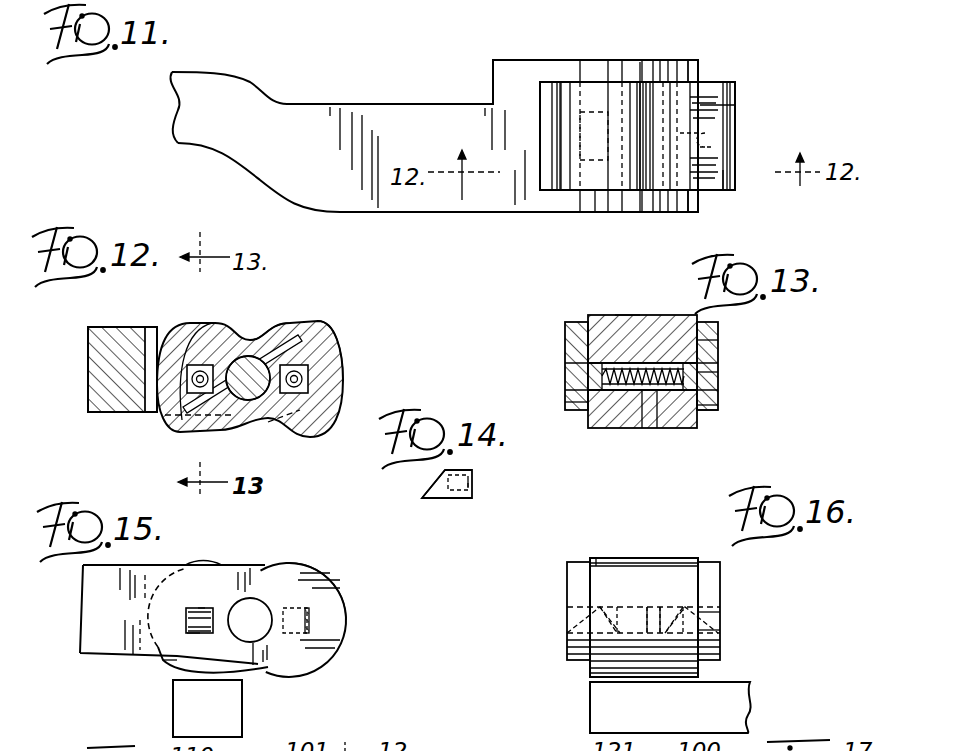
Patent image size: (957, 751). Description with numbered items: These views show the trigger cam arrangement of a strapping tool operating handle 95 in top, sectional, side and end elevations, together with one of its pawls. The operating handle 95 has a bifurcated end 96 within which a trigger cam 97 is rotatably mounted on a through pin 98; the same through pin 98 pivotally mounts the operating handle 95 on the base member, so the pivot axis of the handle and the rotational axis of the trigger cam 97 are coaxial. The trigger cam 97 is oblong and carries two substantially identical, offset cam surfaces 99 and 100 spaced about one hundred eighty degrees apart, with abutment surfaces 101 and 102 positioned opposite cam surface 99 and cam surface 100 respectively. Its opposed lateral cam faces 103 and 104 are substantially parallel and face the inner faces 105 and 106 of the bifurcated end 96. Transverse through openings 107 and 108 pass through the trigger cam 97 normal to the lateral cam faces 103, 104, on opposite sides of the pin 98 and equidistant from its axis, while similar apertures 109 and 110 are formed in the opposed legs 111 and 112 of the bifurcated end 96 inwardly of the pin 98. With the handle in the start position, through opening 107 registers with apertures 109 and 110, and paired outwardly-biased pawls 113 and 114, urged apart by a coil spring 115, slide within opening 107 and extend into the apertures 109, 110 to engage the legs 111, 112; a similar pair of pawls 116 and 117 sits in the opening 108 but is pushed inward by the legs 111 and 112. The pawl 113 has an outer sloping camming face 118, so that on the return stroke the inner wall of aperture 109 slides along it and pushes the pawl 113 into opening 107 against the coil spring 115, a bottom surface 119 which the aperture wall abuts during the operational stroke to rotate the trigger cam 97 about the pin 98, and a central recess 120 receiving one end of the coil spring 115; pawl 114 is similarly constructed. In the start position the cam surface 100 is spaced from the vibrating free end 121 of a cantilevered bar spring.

In FIG. 11, the operating handle 95 is at (420, 100).
In FIG. 12, the operating handle 95 is at (95, 375).
In FIG. 15, the operating handle 95 is at (93, 585).
In FIG. 11, the bifurcated end 96 is at (679, 60).
In FIG. 13, the bifurcated end 96 is at (718, 322).
In FIG. 11, the trigger cam 97 is at (735, 90).
In FIG. 12, the trigger cam 97 is at (312, 350).
In FIG. 13, the trigger cam 97 is at (648, 325).
In FIG. 15, the trigger cam 97 is at (330, 585).
In FIG. 11, the through pin 98 is at (640, 62).
In FIG. 12, the through pin 98 is at (248, 400).
In FIG. 15, the through pin 98 is at (255, 608).
In FIG. 12, the cam surface 99 is at (205, 324).
In FIG. 13, the cam surface 99 is at (625, 317).
In FIG. 15, the cam surface 99 is at (208, 560).
In FIG. 16, the cam surface 99 is at (603, 558).
In FIG. 12, the cam surface 100 is at (292, 438).
In FIG. 15, the cam surface 100 is at (302, 680).
In FIG. 16, the cam surface 100 is at (600, 682).
In FIG. 12, the abutment surface 101 is at (185, 432).
In FIG. 15, the abutment surface 101 is at (175, 680).
In FIG. 12, the abutment surface 102 is at (290, 328).
In FIG. 15, the abutment surface 102 is at (318, 566).
In FIG. 16, the abutment surface 102 is at (652, 560).
In FIG. 13, the lateral cam face 103 is at (588, 418).
In FIG. 11, the lateral cam face 104 is at (720, 80).
In FIG. 13, the lateral cam face 104 is at (720, 340).
In FIG. 11, the inner face 105 is at (565, 190).
In FIG. 13, the inner face 105 is at (588, 328).
In FIG. 11, the inner face 106 is at (563, 88).
In FIG. 13, the inner face 106 is at (692, 412).
In FIG. 12, the transverse through opening 107 is at (172, 417).
In FIG. 13, the transverse through opening 107 is at (640, 396).
In FIG. 11, the transverse through opening 108 is at (742, 135).
In FIG. 12, the transverse through opening 108 is at (310, 395).
In FIG. 15, the transverse through opening 108 is at (305, 640).
In FIG. 13, the aperture 109 is at (575, 375).
In FIG. 15, the aperture 109 is at (187, 632).
In FIG. 16, the aperture 109 is at (567, 617).
In FIG. 13, the aperture 110 is at (718, 372).
In FIG. 16, the aperture 110 is at (722, 612).
In FIG. 11, the leg 111 is at (688, 203).
In FIG. 13, the leg 111 is at (580, 402).
In FIG. 15, the leg 111 is at (255, 565).
In FIG. 16, the leg 111 is at (578, 572).
In FIG. 11, the leg 112 is at (695, 62).
In FIG. 12, the leg 112 is at (160, 335).
In FIG. 13, the leg 112 is at (718, 407).
In FIG. 16, the leg 112 is at (720, 578).
In FIG. 11, the pawl 113 is at (595, 215).
In FIG. 12, the pawl 113 is at (193, 366).
In FIG. 13, the pawl 113 is at (718, 384).
In FIG. 14, the pawl 113 is at (447, 499).
In FIG. 15, the pawl 113 is at (184, 623).
In FIG. 16, the pawl 113 is at (570, 630).
In FIG. 11, the pawl 114 is at (590, 62).
In FIG. 13, the pawl 114 is at (700, 387).
In FIG. 16, the pawl 114 is at (722, 630).
In FIG. 13, the coil spring 115 is at (657, 396).
In FIG. 11, the pawl 116 is at (740, 105).
In FIG. 16, the pawl 116 is at (683, 607).
In FIG. 12, the pawl 117 is at (308, 372).
In FIG. 15, the pawl 117 is at (310, 612).
In FIG. 16, the pawl 117 is at (617, 607).
In FIG. 14, the camming face 118 is at (432, 483).
In FIG. 15, the camming face 118 is at (203, 612).
In FIG. 11, the bottom surface 119 is at (735, 180).
In FIG. 14, the bottom surface 119 is at (432, 498).
In FIG. 14, the central recess 120 is at (470, 483).
In FIG. 15, the vibrating free end 121 is at (222, 706).
In FIG. 16, the vibrating free end 121 is at (605, 722).